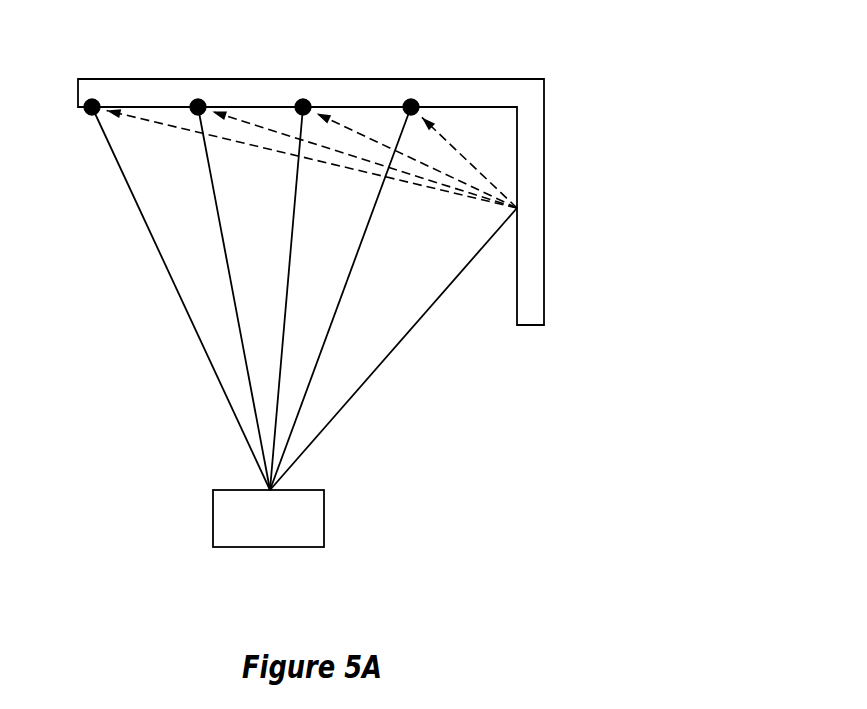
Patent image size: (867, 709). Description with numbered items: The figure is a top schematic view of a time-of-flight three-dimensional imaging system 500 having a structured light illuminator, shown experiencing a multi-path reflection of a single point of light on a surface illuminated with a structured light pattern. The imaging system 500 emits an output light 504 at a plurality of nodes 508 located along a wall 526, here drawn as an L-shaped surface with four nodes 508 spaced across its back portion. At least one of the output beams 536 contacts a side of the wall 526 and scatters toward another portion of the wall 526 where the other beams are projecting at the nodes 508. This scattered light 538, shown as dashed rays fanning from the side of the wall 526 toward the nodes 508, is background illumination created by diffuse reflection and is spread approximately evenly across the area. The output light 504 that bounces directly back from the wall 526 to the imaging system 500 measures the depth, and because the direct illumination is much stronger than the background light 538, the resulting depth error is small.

The 3D imaging system 500 is at (324, 512).
The output light 504 is at (157, 252).
The nodes 508 is at (410, 100).
The wall 526 is at (500, 79).
The output beam 536 is at (396, 350).
The scattered light 538 is at (267, 152).